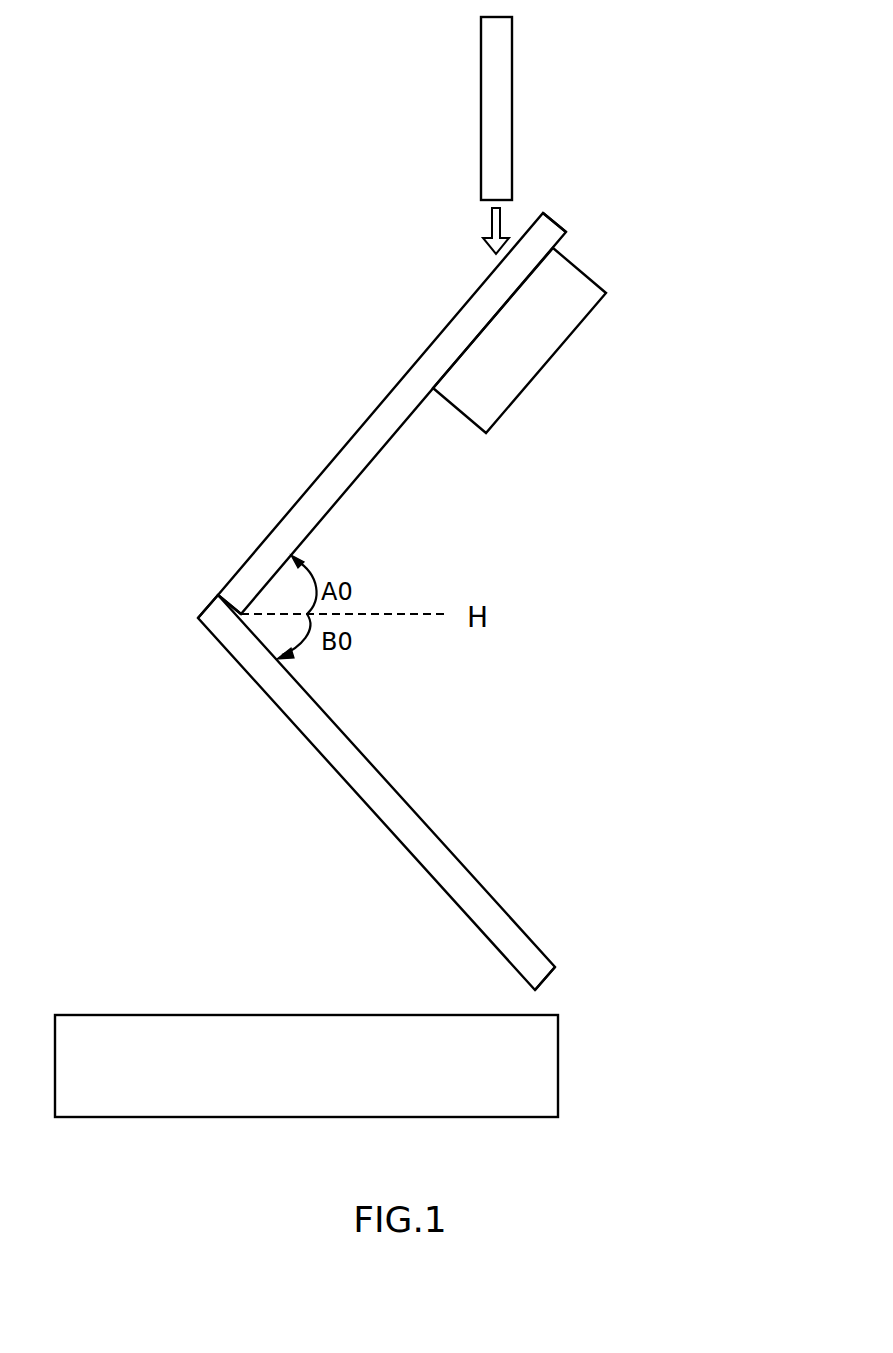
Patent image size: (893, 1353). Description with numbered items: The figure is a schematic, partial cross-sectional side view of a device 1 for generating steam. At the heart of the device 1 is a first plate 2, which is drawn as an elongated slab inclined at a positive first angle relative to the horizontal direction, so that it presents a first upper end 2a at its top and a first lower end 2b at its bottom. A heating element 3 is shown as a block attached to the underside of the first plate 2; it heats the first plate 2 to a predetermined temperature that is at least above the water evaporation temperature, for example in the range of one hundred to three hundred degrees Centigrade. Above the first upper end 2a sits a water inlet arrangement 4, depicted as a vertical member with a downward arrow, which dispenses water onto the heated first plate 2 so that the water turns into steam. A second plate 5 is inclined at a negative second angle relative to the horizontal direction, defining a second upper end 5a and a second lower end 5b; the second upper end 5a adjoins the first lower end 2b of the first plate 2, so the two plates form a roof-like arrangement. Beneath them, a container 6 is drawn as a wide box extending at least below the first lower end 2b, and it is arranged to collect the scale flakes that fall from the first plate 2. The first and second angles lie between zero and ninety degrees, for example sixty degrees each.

The device 1 is at (660, 185).
The first plate 2 is at (355, 432).
The first upper end 2a is at (552, 233).
The first lower end 2b is at (232, 595).
The heating element 3 is at (565, 346).
The water inlet arrangement 4 is at (512, 94).
The second plate 5 is at (343, 781).
The second upper end 5a is at (208, 626).
The second lower end 5b is at (546, 985).
The container 6 is at (110, 1015).